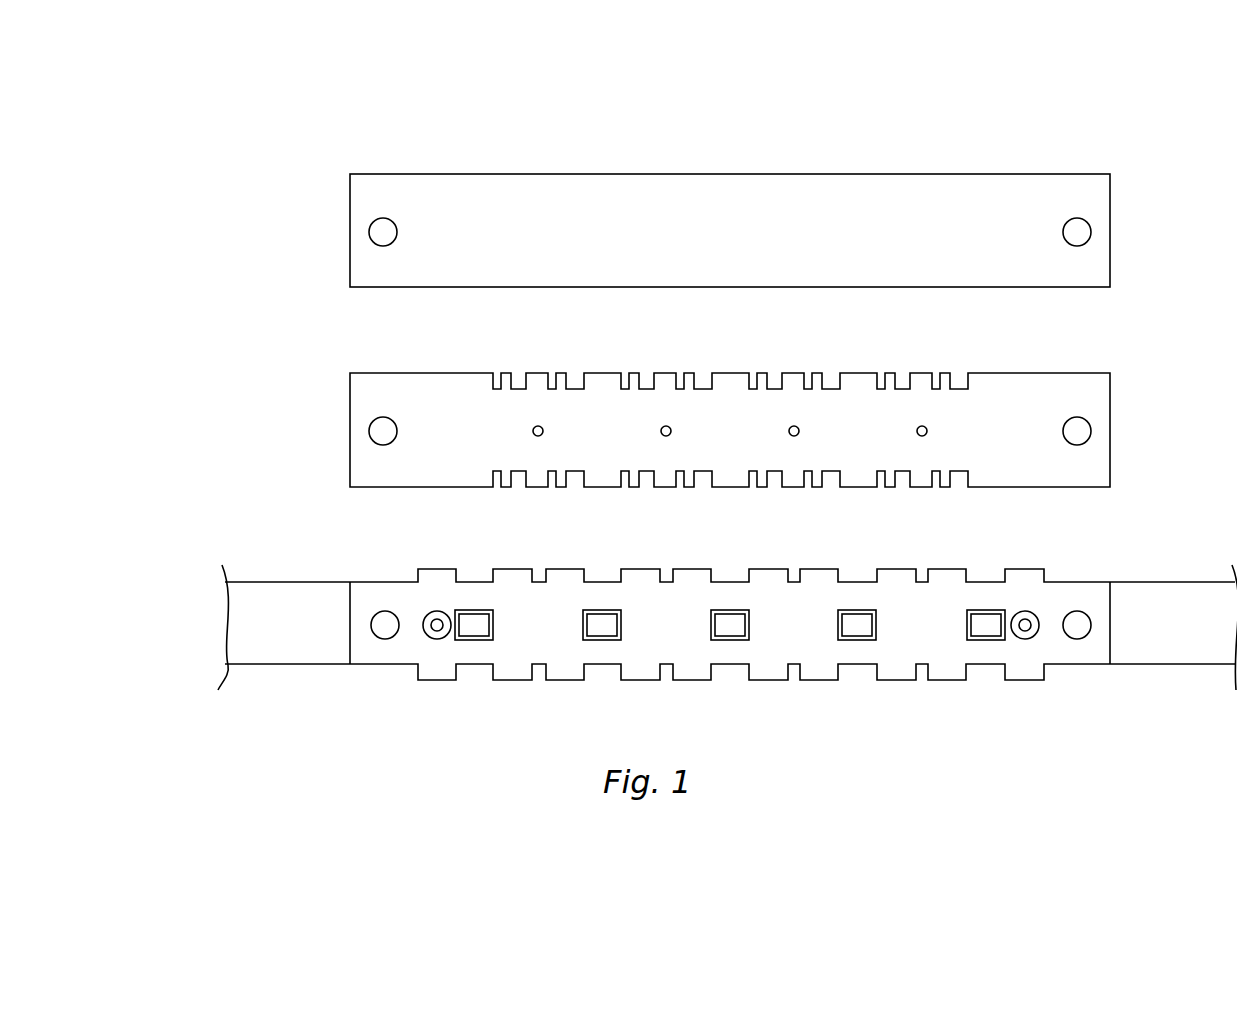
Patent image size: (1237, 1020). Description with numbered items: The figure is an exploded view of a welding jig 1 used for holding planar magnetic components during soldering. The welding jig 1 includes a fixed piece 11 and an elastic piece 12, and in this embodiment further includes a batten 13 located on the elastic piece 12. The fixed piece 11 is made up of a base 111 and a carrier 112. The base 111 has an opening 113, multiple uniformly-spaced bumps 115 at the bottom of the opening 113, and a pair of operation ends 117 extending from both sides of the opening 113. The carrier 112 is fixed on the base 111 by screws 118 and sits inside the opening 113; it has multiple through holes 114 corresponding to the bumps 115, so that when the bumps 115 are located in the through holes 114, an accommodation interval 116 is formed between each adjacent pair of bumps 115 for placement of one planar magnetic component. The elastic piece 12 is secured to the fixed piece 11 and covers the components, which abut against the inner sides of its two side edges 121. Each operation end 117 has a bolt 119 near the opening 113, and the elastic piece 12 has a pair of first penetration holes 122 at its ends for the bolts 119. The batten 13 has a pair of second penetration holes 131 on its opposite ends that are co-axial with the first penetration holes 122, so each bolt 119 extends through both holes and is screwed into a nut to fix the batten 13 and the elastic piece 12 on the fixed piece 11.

The welding jig 1 is at (297, 140).
The fixed piece 11 is at (224, 623).
The base 111 is at (228, 668).
The carrier 112 is at (512, 568).
The opening 113 is at (428, 642).
The through holes 114 is at (970, 608).
The bumps 115 is at (862, 642).
The accommodation interval 116 is at (915, 613).
The operation ends 117 is at (1163, 625).
The screws 118 is at (1027, 611).
The bolt 119 is at (1077, 642).
The elastic piece 12 is at (667, 393).
The side edges 121 is at (886, 372).
The first penetration holes 122 is at (383, 425).
The batten 13 is at (667, 201).
The second penetration holes 131 is at (383, 230).